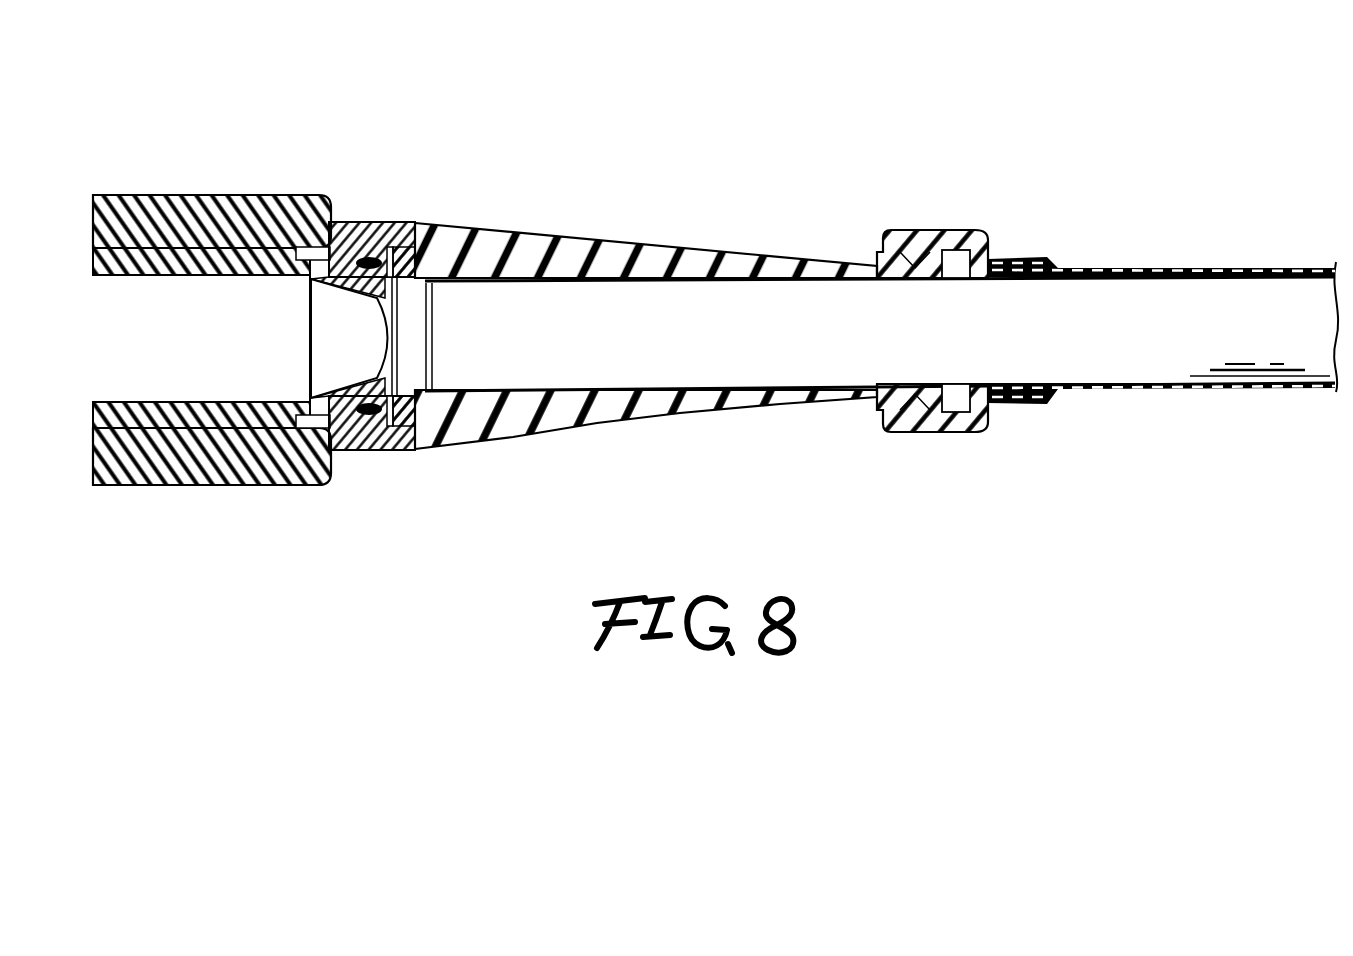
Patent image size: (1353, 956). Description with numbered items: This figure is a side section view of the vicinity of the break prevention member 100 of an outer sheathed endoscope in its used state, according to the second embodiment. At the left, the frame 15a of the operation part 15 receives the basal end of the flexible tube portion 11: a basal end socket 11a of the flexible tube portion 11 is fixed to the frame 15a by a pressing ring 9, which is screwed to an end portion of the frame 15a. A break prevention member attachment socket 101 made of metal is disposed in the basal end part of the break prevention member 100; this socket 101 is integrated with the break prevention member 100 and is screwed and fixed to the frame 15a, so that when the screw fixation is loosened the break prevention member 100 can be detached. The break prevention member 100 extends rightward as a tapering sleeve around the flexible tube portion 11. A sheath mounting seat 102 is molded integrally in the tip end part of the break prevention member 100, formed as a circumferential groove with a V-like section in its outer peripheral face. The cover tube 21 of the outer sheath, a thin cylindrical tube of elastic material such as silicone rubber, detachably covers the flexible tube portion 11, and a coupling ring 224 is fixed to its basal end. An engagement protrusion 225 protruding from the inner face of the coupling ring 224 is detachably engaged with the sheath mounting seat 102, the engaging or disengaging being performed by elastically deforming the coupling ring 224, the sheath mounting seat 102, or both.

The operation part 15 is at (173, 172).
The frame 15a is at (133, 403).
The pressing ring 9 is at (375, 246).
The break prevention member attachment socket 101 is at (405, 452).
The basal end socket 11a is at (329, 278).
The break prevention member 100 is at (702, 413).
The flexible tube portion 11 is at (1158, 367).
The sheath mounting seat 102 is at (908, 245).
The engagement protrusion 225 is at (907, 410).
The coupling ring 224 is at (962, 422).
The cover tube 21 is at (1200, 267).